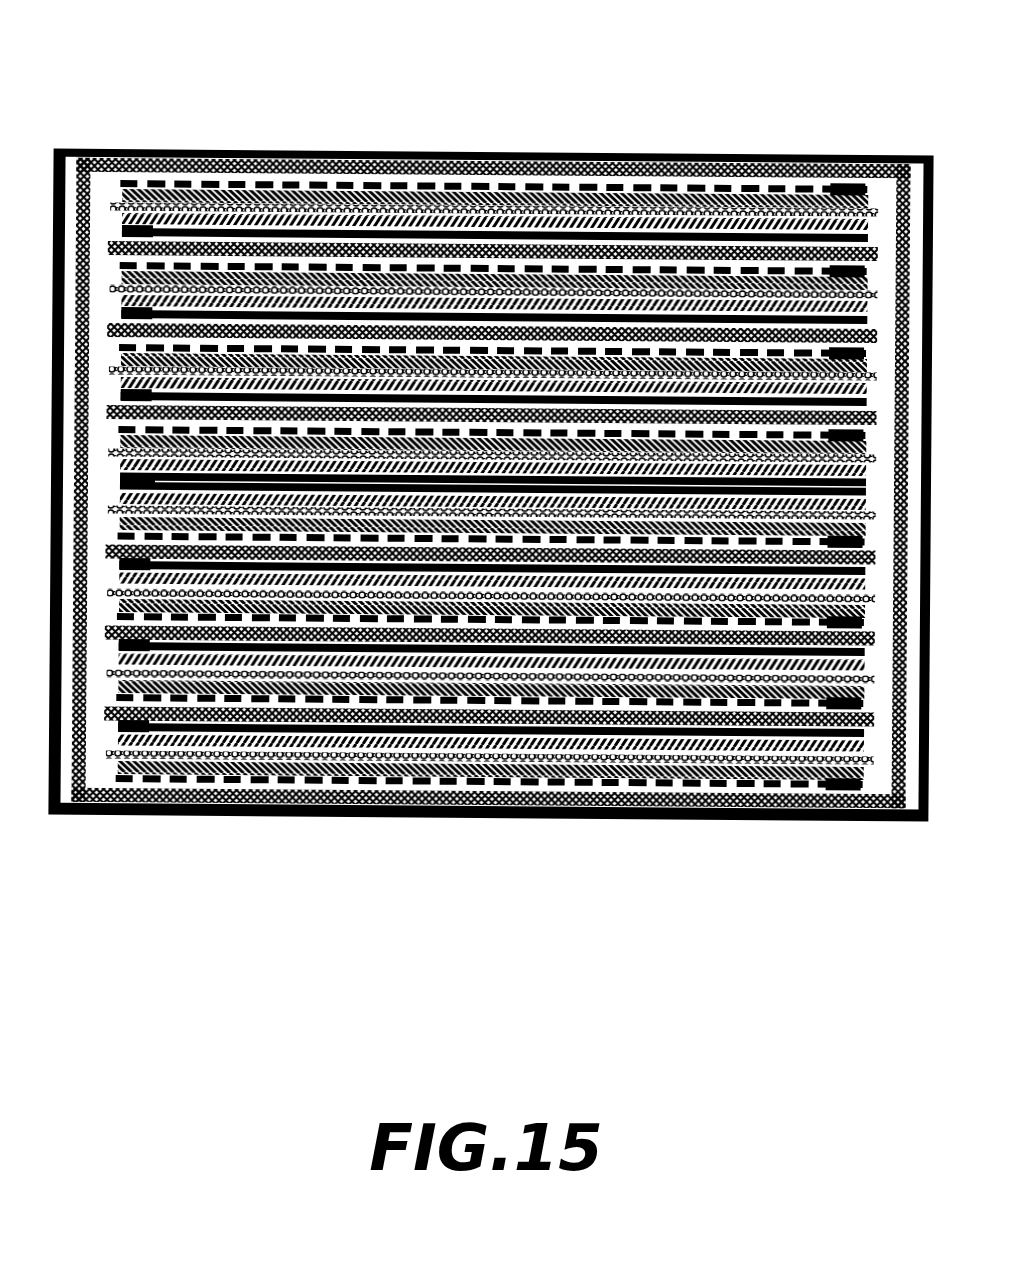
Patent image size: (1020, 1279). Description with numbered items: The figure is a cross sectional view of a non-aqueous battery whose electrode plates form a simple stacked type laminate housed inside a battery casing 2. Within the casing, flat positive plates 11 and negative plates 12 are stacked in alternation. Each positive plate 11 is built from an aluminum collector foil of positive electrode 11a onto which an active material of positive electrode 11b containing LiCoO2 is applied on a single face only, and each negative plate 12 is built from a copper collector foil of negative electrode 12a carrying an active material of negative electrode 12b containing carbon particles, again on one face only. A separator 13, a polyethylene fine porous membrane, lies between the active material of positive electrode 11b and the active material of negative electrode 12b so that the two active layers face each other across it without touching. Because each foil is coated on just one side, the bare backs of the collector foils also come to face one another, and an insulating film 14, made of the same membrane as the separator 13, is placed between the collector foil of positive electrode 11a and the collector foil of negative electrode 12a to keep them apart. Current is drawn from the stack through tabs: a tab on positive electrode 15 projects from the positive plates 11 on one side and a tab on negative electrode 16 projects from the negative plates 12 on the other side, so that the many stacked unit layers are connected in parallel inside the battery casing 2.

The battery casing 2 is at (657, 147).
The positive plate 11 is at (492, 603).
The collector foil of positive electrode 11a is at (313, 676).
The active material of positive electrode 11b is at (387, 690).
The negative plate 12 is at (493, 619).
The collector foil of negative electrode 12a is at (807, 653).
The active material of negative electrode 12b is at (662, 657).
The separator 13 is at (403, 270).
The insulating film 14 is at (583, 247).
The tab on positive electrode 15 is at (828, 257).
The tab on negative electrode 16 is at (150, 655).